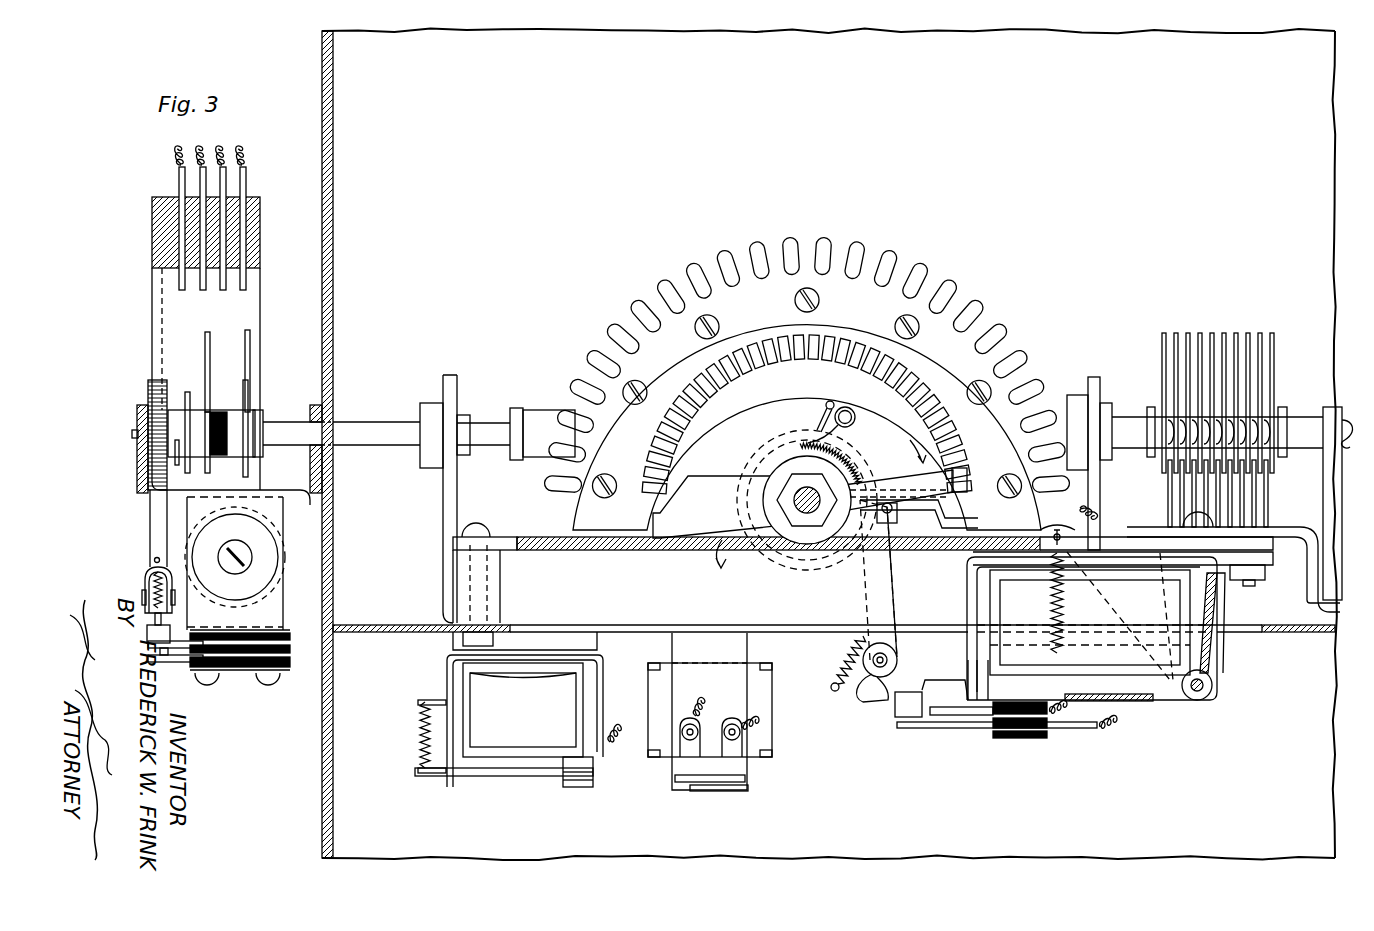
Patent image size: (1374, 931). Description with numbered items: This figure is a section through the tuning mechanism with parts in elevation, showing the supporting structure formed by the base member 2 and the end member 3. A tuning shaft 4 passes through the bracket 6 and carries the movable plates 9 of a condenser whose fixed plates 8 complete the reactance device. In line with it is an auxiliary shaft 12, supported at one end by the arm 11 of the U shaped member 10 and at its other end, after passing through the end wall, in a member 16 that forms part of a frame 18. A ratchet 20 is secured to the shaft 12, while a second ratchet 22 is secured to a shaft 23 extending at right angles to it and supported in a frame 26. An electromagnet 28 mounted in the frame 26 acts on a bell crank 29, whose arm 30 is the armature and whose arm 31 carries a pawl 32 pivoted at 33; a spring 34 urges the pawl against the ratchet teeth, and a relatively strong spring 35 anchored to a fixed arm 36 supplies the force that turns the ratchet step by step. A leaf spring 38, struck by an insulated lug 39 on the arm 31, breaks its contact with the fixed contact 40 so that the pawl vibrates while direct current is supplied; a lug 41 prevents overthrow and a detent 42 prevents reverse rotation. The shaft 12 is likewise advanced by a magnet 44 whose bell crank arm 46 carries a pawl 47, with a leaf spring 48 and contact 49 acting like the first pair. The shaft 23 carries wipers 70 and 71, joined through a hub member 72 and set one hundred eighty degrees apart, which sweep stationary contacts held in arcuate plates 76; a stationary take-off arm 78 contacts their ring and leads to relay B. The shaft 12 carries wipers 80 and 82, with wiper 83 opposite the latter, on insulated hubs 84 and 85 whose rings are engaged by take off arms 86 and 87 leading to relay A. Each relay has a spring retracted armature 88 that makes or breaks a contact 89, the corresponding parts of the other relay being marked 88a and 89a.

The base member 2 is at (396, 633).
The end member 3 is at (320, 727).
The tuning shaft 4 is at (1127, 428).
The bracket 6 is at (1097, 396).
The fixed plates 8 is at (1250, 490).
The movable plates 9 is at (1225, 338).
The U shaped member 10 is at (432, 516).
The arm 11 is at (451, 378).
The auxiliary shaft 12 is at (358, 429).
The member 16 is at (137, 473).
The frame 18 is at (300, 497).
The ratchet 20 is at (150, 378).
The ratchet 22 is at (845, 455).
The shaft 23 is at (806, 508).
The supporting frame 26 is at (604, 565).
The electromagnet 28 is at (1150, 660).
The bell crank 29 is at (1214, 690).
The arm 30 is at (1213, 641).
The arm 31 is at (949, 674).
The pawl 32 is at (890, 602).
The pivot 33 is at (878, 682).
The spring 34 is at (846, 657).
The spring 35 is at (1070, 583).
The fixed arm 36 is at (1070, 530).
The leaf spring 38 is at (958, 731).
The insulated lug 39 is at (897, 707).
The fixed contact 40 is at (975, 716).
The lug 41 is at (892, 521).
The detent 42 is at (828, 402).
The magnet 44 is at (283, 554).
The arm 46 is at (146, 583).
The pawl 47 is at (150, 543).
The leaf spring 48 is at (193, 666).
The contact 49 is at (185, 650).
The wiper 70 is at (870, 482).
The wiper 71 is at (738, 527).
The hub member 72 is at (785, 470).
The arcuate plates 76 is at (998, 345).
The take-off arm 78 is at (940, 506).
The wiper 80 is at (249, 364).
The wiper 82 is at (213, 333).
The wiper 83 is at (177, 458).
The hub 84 is at (250, 462).
The hub 85 is at (207, 460).
The take off arm 86 is at (240, 426).
The take off arm 87 is at (182, 420).
The spring retracted armature 88 is at (500, 777).
The contact 89 is at (578, 788).
The coil support 88a is at (690, 782).
The contact block 89a is at (716, 793).
The relay B is at (770, 705).